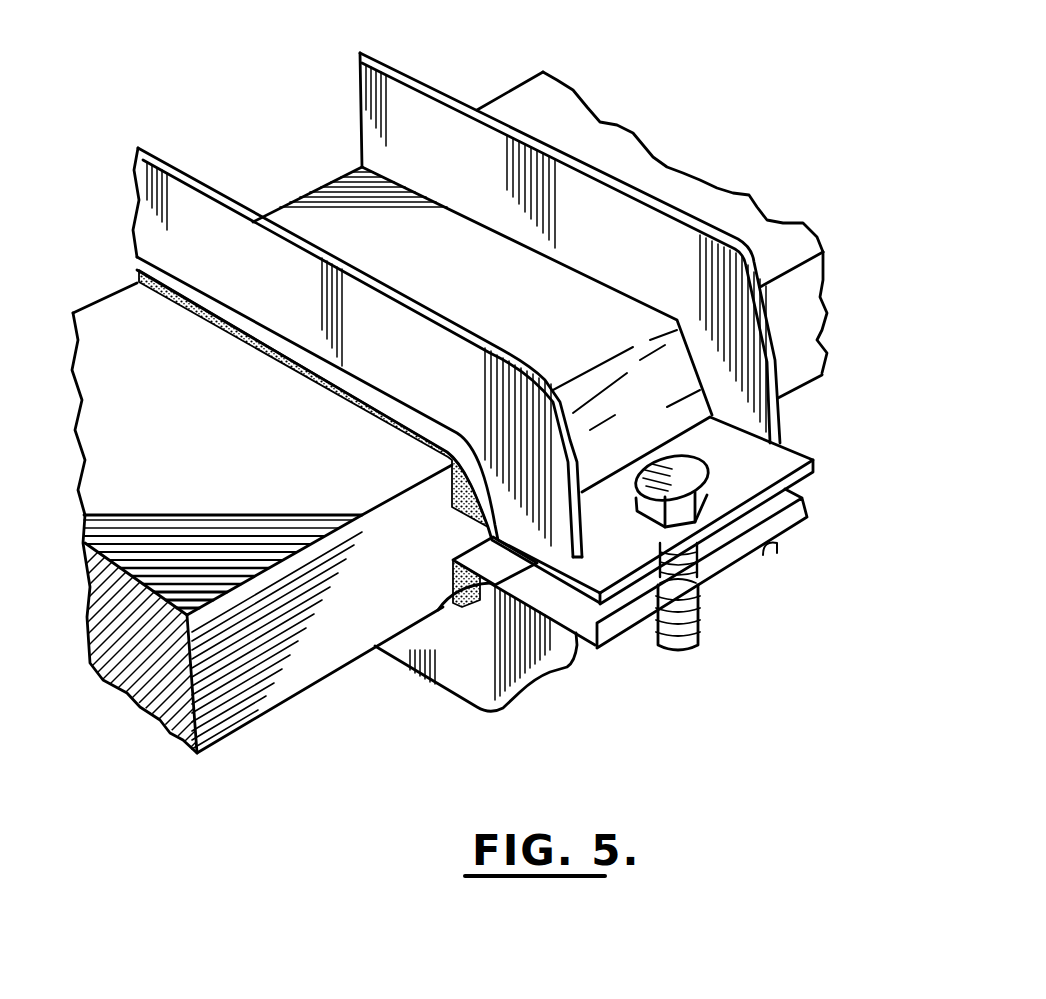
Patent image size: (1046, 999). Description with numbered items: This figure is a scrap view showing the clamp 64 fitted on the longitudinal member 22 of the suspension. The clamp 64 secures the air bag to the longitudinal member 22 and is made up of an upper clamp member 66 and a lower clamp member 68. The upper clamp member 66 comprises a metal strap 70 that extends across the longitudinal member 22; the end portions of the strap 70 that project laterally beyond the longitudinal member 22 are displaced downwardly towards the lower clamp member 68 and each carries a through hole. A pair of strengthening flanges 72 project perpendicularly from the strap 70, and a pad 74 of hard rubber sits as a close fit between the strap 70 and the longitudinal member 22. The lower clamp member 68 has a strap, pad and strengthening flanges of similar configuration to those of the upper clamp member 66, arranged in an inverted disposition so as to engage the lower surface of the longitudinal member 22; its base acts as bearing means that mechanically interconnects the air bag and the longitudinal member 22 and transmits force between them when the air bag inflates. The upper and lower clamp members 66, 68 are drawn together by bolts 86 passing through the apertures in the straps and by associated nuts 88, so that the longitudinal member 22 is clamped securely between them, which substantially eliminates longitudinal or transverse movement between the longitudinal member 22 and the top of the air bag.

The longitudinal member 22 is at (188, 447).
The clamp 64 is at (805, 535).
The upper clamp member 66 is at (648, 178).
The lower clamp member 68 is at (523, 690).
The strap 70 is at (472, 287).
The strengthening flanges 72 is at (276, 277).
The pad 74 is at (352, 394).
The bolts 86 is at (702, 470).
The nuts 88 is at (703, 588).